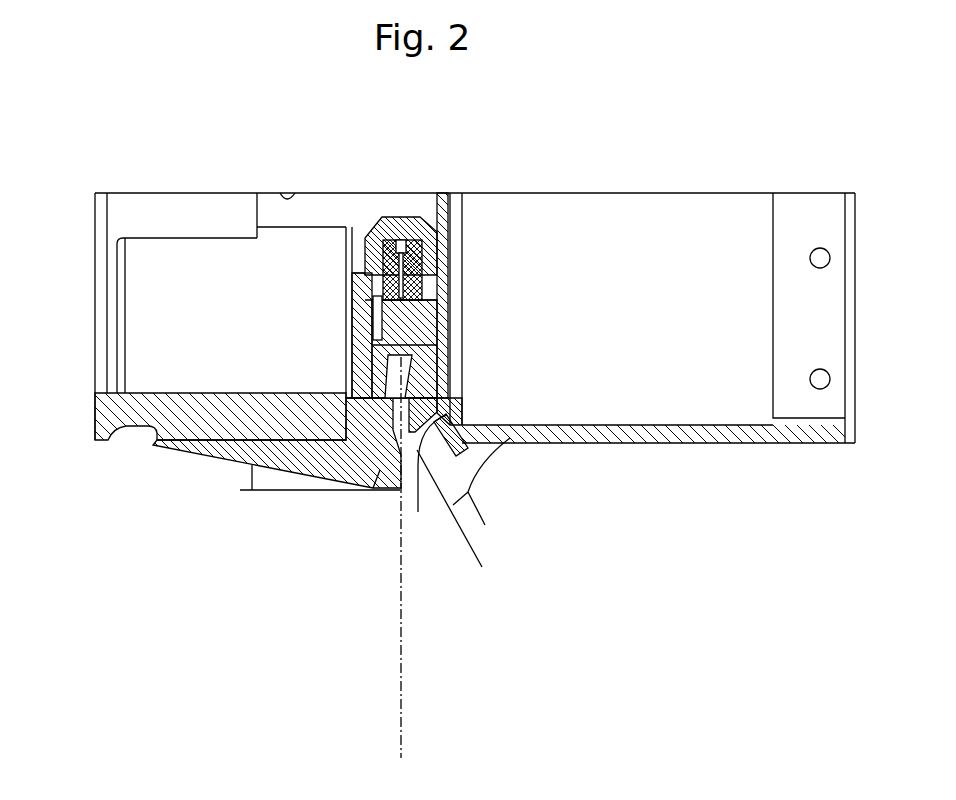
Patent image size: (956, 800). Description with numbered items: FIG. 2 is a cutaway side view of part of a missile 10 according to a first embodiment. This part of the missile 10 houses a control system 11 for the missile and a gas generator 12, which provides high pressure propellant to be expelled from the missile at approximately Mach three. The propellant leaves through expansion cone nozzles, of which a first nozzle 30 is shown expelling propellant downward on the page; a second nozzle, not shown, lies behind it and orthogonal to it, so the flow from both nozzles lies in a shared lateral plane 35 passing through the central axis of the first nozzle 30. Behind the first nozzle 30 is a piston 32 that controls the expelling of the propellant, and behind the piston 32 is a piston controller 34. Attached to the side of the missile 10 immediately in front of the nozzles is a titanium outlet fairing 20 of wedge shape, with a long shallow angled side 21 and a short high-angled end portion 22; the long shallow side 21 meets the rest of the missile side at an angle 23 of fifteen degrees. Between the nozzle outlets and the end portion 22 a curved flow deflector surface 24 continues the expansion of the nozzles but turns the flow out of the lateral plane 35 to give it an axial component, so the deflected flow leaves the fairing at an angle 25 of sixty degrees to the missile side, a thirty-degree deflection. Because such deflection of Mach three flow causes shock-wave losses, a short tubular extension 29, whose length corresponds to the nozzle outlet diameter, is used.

The missile 10 is at (628, 151).
The control system 11 is at (207, 275).
The gas generator 12 is at (700, 387).
The outlet fairing 20 is at (88, 496).
The long shallow angled side 21 is at (307, 472).
The short high-angled end portion 22 is at (437, 427).
The angle 23 is at (250, 478).
The curved flow deflector surface 24 is at (373, 493).
The angle 25 is at (455, 510).
The short tubular extension 29 is at (418, 512).
The first nozzle 30 is at (418, 366).
The piston 32 is at (453, 297).
The piston controller 34 is at (394, 217).
The lateral plane 35 is at (401, 672).